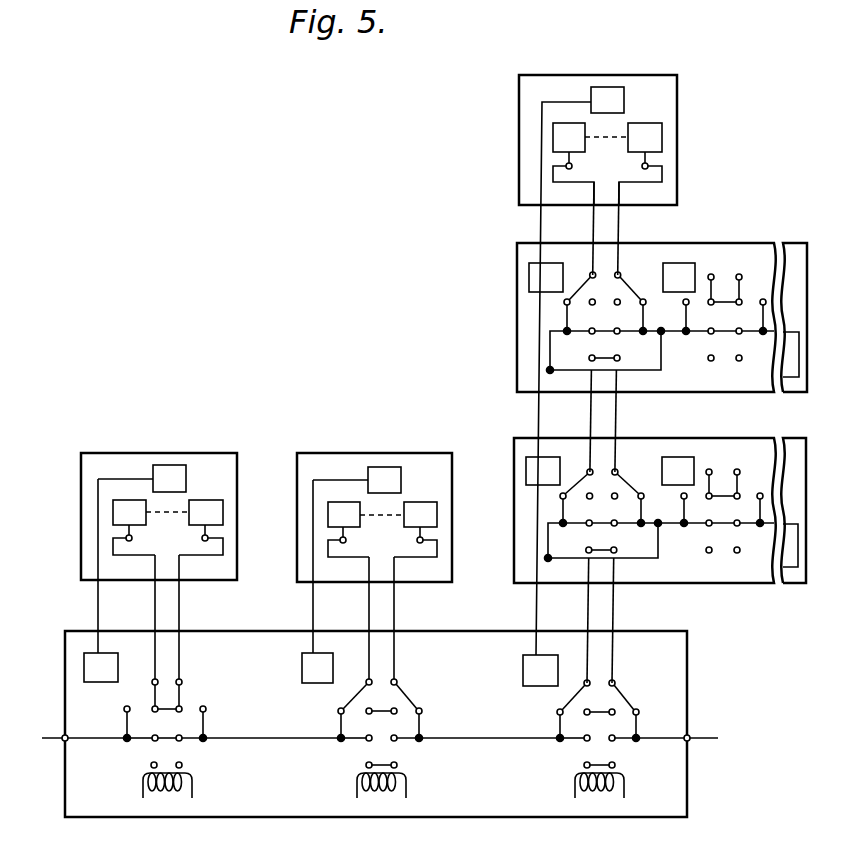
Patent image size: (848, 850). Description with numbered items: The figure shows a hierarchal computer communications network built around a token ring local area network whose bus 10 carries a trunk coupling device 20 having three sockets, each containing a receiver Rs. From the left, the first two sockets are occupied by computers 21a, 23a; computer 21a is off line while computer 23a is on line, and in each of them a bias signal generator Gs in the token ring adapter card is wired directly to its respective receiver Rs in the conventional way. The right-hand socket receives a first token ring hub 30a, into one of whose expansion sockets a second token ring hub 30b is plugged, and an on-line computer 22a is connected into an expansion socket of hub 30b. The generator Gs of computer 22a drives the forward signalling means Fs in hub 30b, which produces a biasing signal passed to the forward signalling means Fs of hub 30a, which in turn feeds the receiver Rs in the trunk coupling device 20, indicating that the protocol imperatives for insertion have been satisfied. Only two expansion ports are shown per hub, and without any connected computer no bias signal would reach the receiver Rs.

The bus 10 is at (48, 736).
The trunk coupling device 20 is at (678, 665).
The computer 21a is at (118, 458).
The on-line computer 22a is at (668, 102).
The computer 23a is at (338, 460).
The first token ring hub 30a is at (514, 467).
The second token ring hub 30b is at (515, 296).